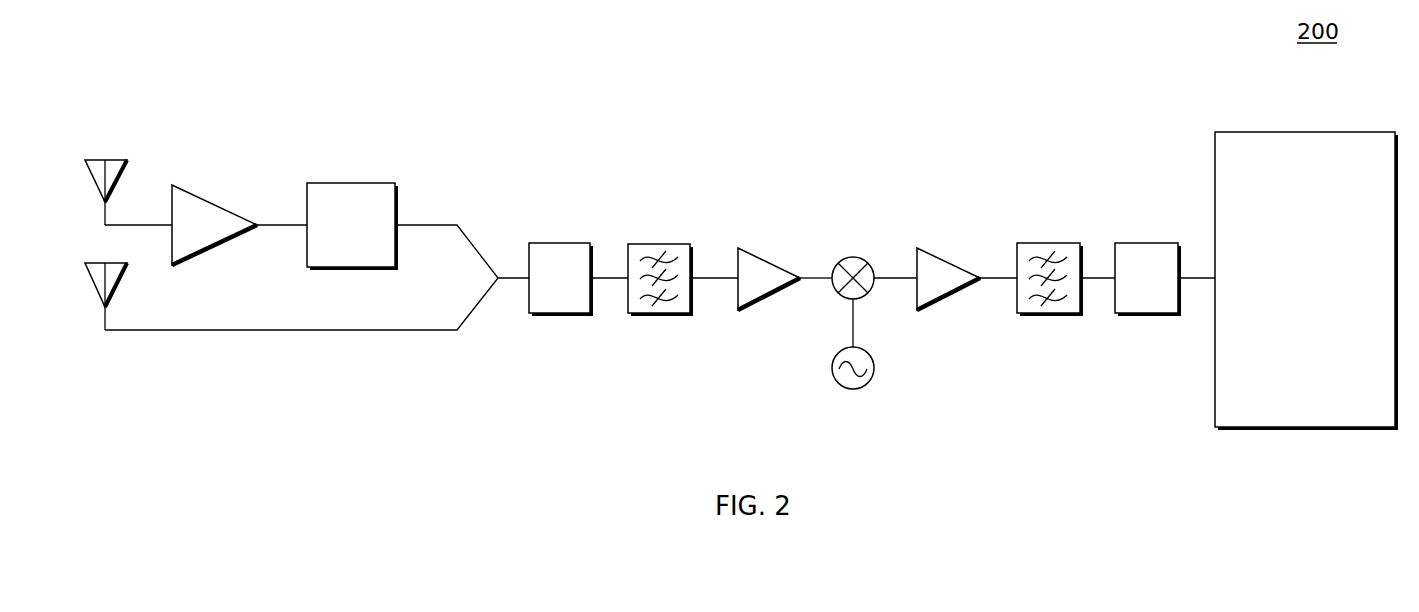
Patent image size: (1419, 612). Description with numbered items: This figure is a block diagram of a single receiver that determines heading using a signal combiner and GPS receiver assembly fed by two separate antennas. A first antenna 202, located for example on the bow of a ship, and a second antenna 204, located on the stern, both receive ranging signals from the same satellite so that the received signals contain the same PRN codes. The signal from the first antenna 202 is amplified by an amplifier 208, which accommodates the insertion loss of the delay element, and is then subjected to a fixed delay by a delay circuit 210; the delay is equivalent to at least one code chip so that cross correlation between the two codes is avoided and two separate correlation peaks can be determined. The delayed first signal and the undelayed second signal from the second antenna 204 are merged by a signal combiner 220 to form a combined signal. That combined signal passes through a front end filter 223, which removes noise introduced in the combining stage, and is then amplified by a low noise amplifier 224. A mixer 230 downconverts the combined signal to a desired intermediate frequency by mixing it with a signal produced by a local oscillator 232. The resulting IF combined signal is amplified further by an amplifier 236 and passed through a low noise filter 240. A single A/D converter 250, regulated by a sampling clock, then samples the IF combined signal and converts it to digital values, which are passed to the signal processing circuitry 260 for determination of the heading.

The first antenna 202 is at (118, 162).
The second antenna 204 is at (118, 292).
The amplifier 208 is at (192, 185).
The delay circuit 210 is at (378, 183).
The signal combiner 220 is at (552, 313).
The front end filter 223 is at (652, 244).
The low noise amplifier 224 is at (752, 253).
The mixer 230 is at (860, 259).
The local oscillator 232 is at (832, 368).
The amplifier 236 is at (930, 310).
The low noise filter 240 is at (1048, 243).
The A/D converter 250 is at (1147, 243).
The signal processing circuitry 260 is at (1215, 152).